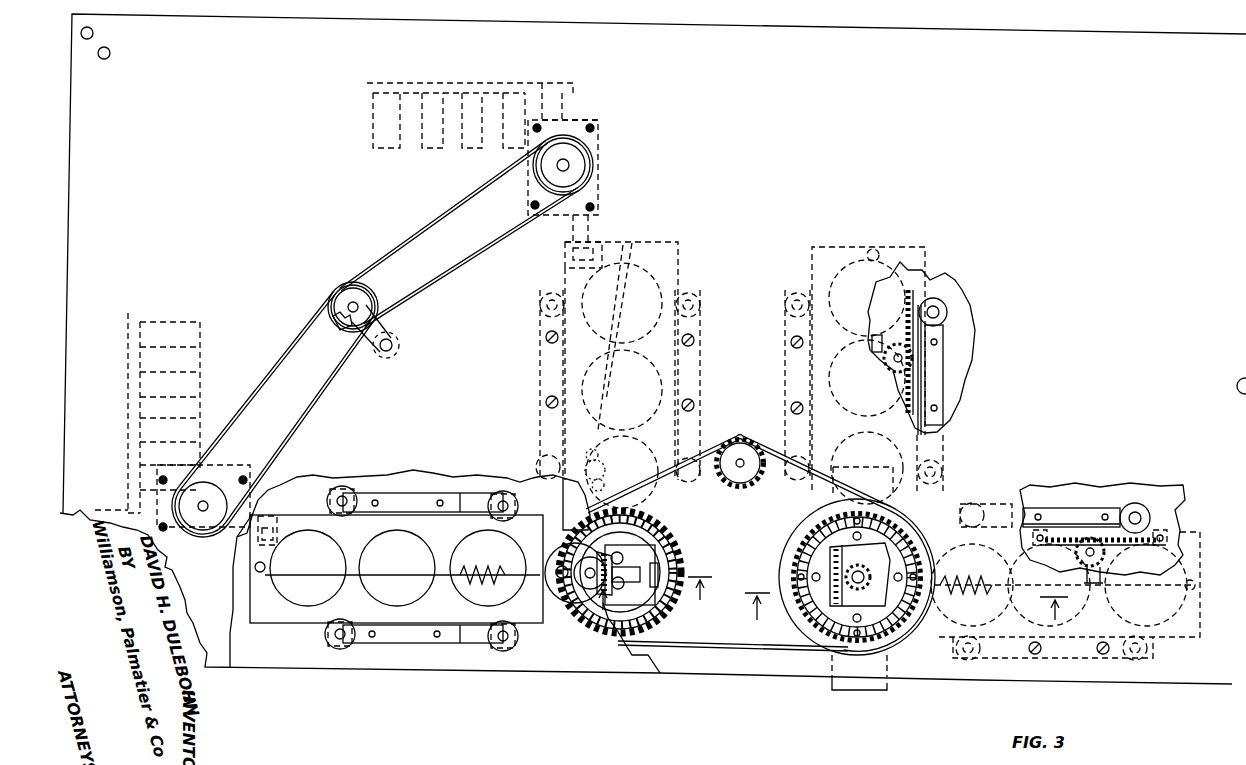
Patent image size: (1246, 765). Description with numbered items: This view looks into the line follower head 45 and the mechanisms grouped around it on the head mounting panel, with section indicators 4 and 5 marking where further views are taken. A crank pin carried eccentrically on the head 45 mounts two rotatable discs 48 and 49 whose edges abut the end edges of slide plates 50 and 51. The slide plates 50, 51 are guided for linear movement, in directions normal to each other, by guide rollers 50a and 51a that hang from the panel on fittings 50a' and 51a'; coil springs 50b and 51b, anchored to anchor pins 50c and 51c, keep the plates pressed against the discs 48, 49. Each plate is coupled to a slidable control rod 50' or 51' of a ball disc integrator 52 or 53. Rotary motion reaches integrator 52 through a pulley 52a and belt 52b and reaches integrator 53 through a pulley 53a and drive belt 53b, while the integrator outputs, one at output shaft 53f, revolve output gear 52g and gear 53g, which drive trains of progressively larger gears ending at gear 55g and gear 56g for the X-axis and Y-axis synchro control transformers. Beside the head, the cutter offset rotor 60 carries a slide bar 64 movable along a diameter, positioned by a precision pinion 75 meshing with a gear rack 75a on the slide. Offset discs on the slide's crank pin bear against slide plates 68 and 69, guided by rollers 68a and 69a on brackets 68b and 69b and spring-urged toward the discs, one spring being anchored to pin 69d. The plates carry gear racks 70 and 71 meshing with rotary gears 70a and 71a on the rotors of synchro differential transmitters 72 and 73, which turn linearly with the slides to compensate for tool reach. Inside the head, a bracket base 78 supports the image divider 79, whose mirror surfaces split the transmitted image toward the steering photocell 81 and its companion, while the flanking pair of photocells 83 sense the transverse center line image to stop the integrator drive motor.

The section line 4- 4 is at (652, 604).
The section line 5- 5 is at (906, 616).
The head 45 is at (668, 540).
The rotatable disc 48 is at (572, 605).
The rotatable disc 49 is at (560, 545).
The slide plate 50 is at (396, 569).
The slidable control rod 50' is at (288, 515).
The guide rollers 50a is at (421, 662).
The fittings 50a' is at (422, 488).
The coil spring 50b is at (483, 562).
The anchor pin 50c is at (268, 568).
The slide plate 51 is at (660, 381).
The slidable control rod 51' is at (602, 241).
The guide rollers 51a is at (673, 386).
The fittings 51a' is at (674, 372).
The coil spring 51b is at (592, 455).
The anchor pin 51c is at (630, 246).
The ball disc integrator 52 is at (288, 492).
The pulley 52a is at (212, 484).
The belt 52b is at (322, 392).
The output gear 52g is at (128, 508).
The ball disc integrator 53 is at (602, 142).
The pulley 53a is at (580, 168).
The drive belt 53b is at (506, 234).
The output shaft 53f is at (575, 112).
The gear 53g is at (565, 92).
The gear 55g is at (122, 402).
The gear 56g is at (415, 83).
The cutter offset rotor 60 is at (920, 545).
The slide bar 64 is at (887, 687).
The slide plate 68 is at (1175, 535).
The rollers 68a is at (1150, 510).
The brackets 68b is at (1065, 508).
The slide plate 69 is at (935, 280).
The rollers 69a is at (945, 305).
The brackets 69b is at (945, 362).
The pin 69d is at (895, 248).
The gear rack 70 is at (1110, 552).
The rotary gear 70a is at (1093, 570).
The gear rack 71 is at (905, 318).
The rotary gear 71a is at (895, 370).
The synchro differential transmitter 72 is at (1098, 556).
The synchro differential transmitter 73 is at (872, 346).
The precision pinion 75 is at (860, 574).
The gear rack 75a is at (863, 583).
The bracket base 78 is at (648, 560).
The image divider 79 is at (660, 600).
The photocell 81 is at (660, 576).
The photocells 83 is at (618, 558).